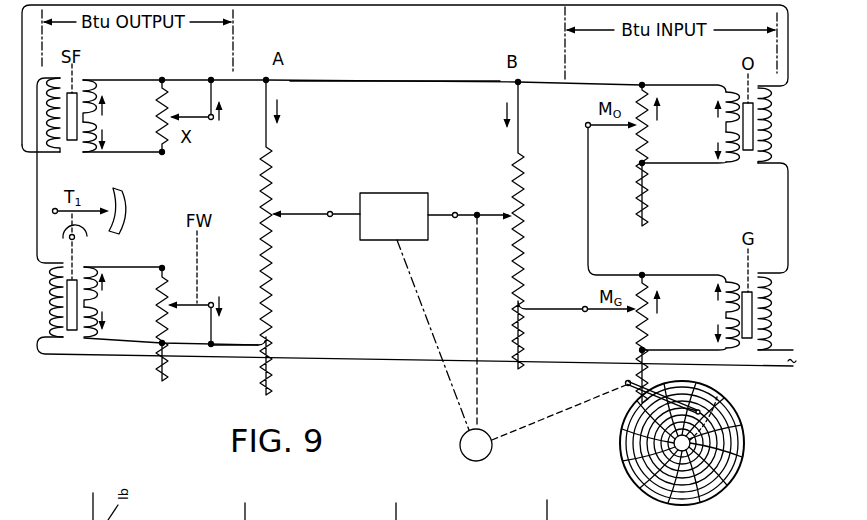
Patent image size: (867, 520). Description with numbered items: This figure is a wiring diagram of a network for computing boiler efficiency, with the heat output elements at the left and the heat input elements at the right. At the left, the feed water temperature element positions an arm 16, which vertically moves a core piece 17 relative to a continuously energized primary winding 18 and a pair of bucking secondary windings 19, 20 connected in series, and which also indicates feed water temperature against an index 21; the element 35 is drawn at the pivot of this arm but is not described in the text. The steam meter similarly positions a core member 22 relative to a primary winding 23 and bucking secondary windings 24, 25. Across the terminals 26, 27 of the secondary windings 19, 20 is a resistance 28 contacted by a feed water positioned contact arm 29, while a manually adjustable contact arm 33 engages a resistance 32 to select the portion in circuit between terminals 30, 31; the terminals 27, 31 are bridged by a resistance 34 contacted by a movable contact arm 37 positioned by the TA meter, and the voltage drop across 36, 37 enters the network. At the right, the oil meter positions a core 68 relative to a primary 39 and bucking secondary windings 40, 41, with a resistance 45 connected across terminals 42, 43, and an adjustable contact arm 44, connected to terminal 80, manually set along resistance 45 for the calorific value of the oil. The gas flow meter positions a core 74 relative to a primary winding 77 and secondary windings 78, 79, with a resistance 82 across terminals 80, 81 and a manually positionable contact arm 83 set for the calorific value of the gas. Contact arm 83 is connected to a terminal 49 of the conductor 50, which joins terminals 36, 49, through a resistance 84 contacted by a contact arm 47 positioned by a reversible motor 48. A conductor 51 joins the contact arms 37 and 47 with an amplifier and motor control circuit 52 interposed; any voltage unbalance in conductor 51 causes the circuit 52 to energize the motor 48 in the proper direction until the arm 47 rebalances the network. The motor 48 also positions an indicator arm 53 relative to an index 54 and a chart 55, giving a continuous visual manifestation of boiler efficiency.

The arm 16 is at (54, 213).
The movable core piece 17 is at (72, 331).
The primary winding 18 is at (44, 300).
The secondary winding 19 is at (98, 285).
The secondary winding 20 is at (98, 315).
The index 21 is at (126, 200).
The movable core member 22 is at (73, 140).
The primary winding 23 is at (54, 149).
The secondary winding 24 is at (97, 102).
The secondary winding 25 is at (97, 124).
The terminal 26 is at (164, 268).
The terminal 27 is at (166, 342).
The resistance 28 is at (158, 306).
The contact arm 29 is at (211, 304).
The terminal 30 is at (163, 153).
The terminal 31 is at (164, 82).
The resistance 32 is at (158, 102).
The contact arm 33 is at (211, 120).
The resistance 34 is at (260, 187).
The temperature bulb 35 is at (80, 238).
The terminal 36 is at (262, 82).
The contact arm 37 is at (308, 212).
The primary winding 39 is at (771, 116).
The secondary winding 40 is at (722, 119).
The secondary winding 41 is at (722, 140).
The terminal 42 is at (646, 88).
The terminal 43 is at (642, 166).
The adjustable contact arm 44 is at (618, 127).
The resistance 45 is at (649, 135).
The contact arm 47 is at (463, 213).
The reversible motor 48 is at (461, 433).
The terminal 49 is at (520, 84).
The conductor 50 is at (371, 83).
The conductor 51 is at (345, 210).
The amplifier and motor control circuit 52 is at (392, 193).
The indicator arm 53 is at (628, 389).
The index 54 is at (719, 398).
The chart 55 is at (742, 466).
The core 68 is at (750, 152).
The core 74 is at (750, 338).
The primary winding 77 is at (771, 312).
The secondary winding 78 is at (722, 302).
The secondary winding 79 is at (722, 327).
The terminal 80 is at (643, 272).
The terminal 81 is at (640, 350).
The resistance 82 is at (651, 326).
The contact arm 83 is at (594, 313).
The resistance 84 is at (527, 207).